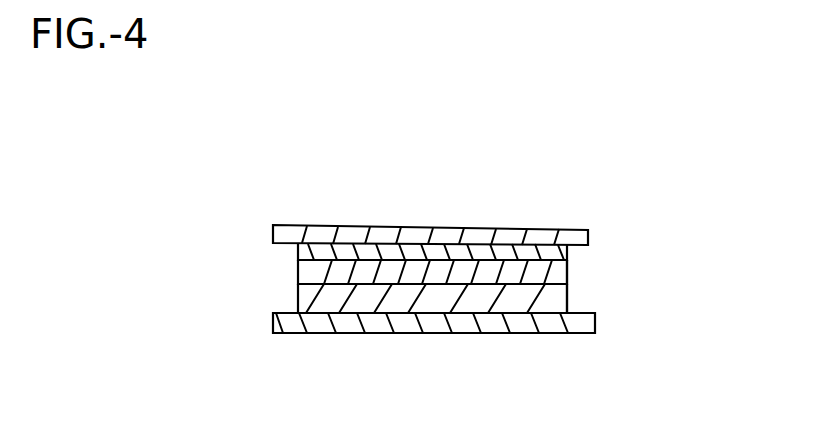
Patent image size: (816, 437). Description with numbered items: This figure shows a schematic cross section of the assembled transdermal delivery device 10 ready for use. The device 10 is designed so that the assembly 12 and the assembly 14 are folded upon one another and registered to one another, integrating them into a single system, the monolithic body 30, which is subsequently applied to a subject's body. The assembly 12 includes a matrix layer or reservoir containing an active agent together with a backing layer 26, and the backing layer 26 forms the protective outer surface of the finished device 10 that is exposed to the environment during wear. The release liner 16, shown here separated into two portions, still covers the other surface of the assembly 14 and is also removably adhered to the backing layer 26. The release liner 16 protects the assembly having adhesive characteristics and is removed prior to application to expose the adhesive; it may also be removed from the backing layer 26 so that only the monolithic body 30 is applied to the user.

The transdermal delivery device 10 is at (264, 177).
The assembly 12 is at (299, 267).
The assembly 14 is at (299, 297).
The release liner 16 is at (413, 226).
The backing layer 26 is at (463, 252).
The monolithic body 30 is at (567, 283).